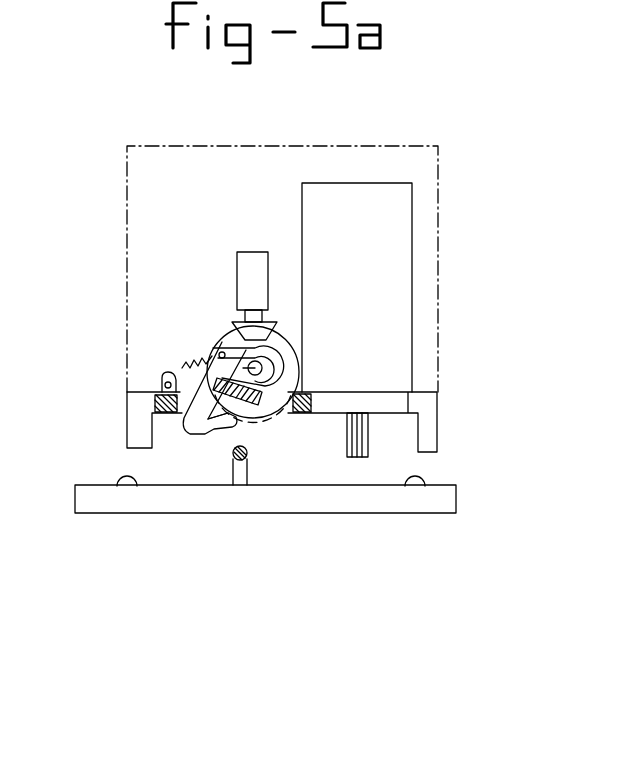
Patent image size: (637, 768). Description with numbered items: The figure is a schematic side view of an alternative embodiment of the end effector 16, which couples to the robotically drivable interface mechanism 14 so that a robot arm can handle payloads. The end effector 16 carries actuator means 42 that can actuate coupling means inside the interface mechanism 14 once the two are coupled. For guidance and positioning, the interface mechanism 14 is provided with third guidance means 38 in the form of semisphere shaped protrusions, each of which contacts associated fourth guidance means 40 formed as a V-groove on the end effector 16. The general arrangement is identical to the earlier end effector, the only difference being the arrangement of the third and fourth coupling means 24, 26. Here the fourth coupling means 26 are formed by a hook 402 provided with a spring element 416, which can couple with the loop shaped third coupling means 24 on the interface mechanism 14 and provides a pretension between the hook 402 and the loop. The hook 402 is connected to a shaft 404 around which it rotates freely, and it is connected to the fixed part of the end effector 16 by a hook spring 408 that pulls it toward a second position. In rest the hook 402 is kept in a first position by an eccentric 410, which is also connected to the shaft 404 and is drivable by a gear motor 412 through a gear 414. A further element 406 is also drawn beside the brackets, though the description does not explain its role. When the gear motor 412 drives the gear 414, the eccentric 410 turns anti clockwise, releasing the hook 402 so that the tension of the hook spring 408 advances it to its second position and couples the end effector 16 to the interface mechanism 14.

The interface mechanism 14 is at (364, 497).
The end effector 16 is at (432, 187).
The third coupling means 24 is at (250, 457).
The fourth coupling means 26 is at (238, 246).
The third guidance means 38 is at (128, 488).
The fourth guidance means 40 is at (137, 430).
The actuator means 42 is at (400, 248).
The hook 402 is at (190, 436).
The shaft 404 is at (210, 360).
The guide block 406 is at (365, 442).
The hook spring 408 is at (197, 377).
The eccentric 410 is at (270, 388).
The gear motor 412 is at (237, 270).
The gear 414 is at (245, 343).
The spring element 416 is at (221, 433).